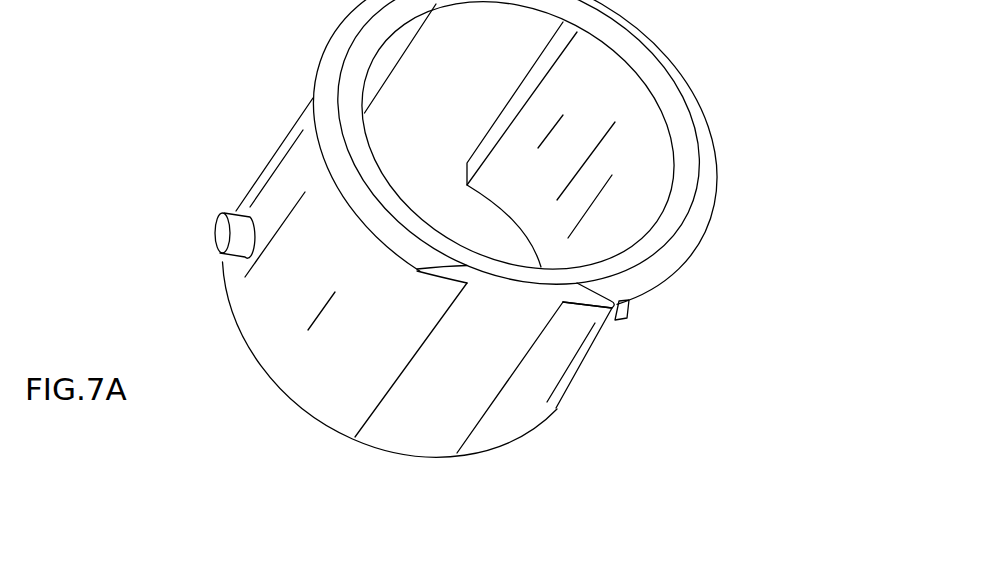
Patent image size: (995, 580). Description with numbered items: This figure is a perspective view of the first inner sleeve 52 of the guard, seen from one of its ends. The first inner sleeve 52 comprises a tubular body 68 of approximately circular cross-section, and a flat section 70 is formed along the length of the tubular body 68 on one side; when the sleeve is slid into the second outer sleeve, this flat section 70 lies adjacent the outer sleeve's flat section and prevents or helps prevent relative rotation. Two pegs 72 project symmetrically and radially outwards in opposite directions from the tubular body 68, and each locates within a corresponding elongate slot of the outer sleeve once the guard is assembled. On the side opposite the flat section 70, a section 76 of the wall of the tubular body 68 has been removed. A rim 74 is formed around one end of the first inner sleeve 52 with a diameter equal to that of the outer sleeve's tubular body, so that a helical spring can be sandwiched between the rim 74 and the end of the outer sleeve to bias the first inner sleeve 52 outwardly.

The first inner sleeve 52 is at (333, 579).
The tubular body 68 is at (333, 360).
The flat section 70 is at (447, 407).
The pegs 72 is at (214, 229).
The rim 74 is at (315, 78).
The section of the wall 76 is at (478, 97).